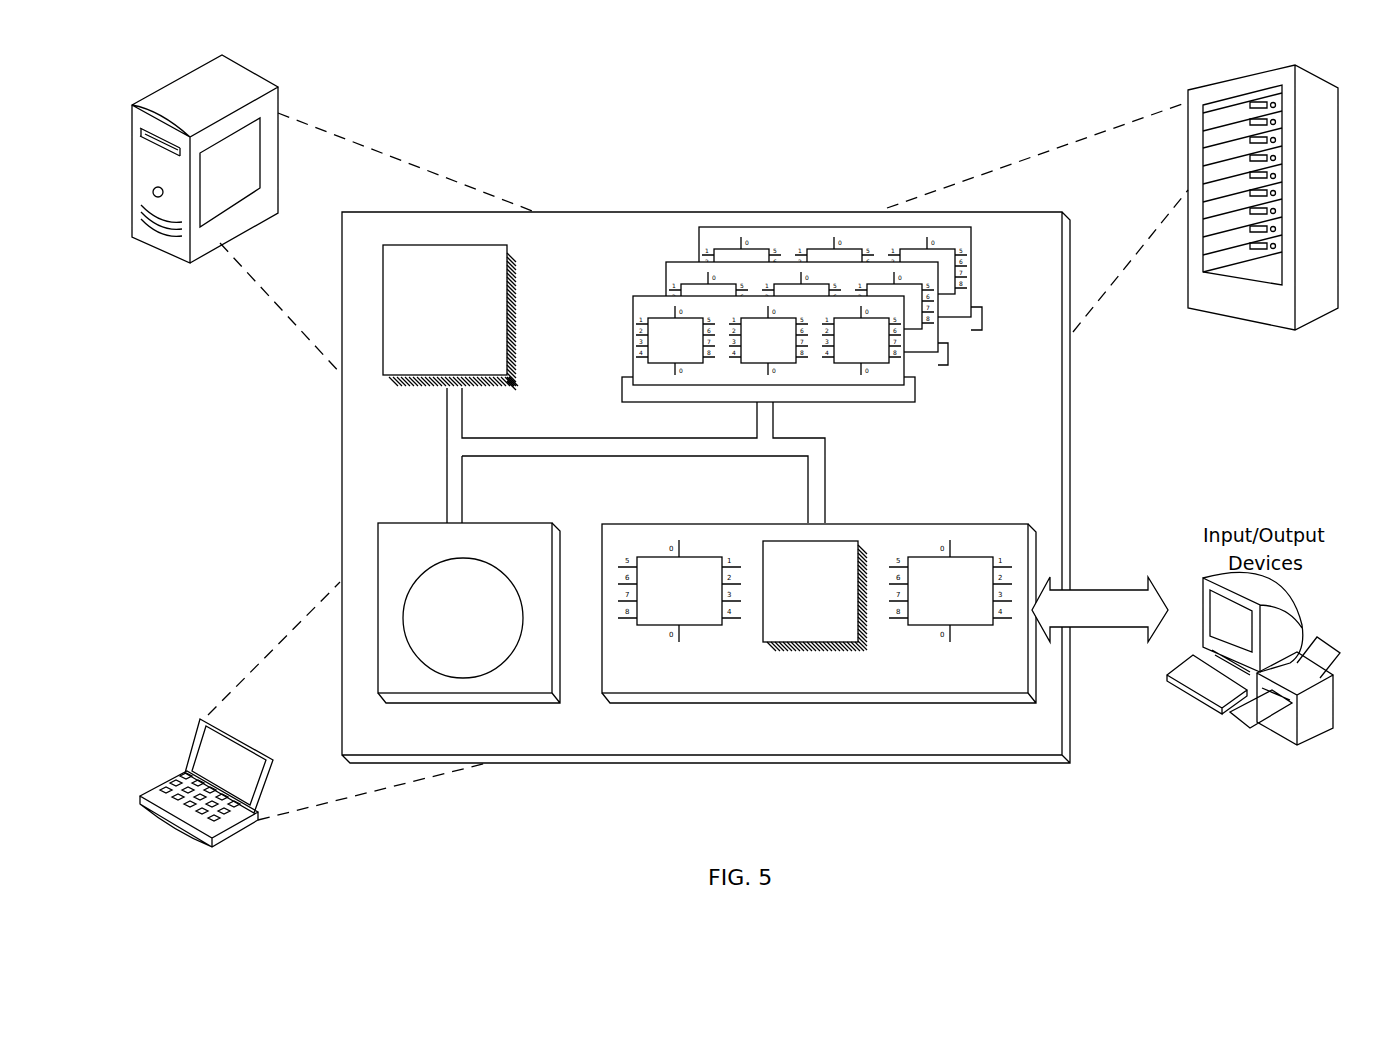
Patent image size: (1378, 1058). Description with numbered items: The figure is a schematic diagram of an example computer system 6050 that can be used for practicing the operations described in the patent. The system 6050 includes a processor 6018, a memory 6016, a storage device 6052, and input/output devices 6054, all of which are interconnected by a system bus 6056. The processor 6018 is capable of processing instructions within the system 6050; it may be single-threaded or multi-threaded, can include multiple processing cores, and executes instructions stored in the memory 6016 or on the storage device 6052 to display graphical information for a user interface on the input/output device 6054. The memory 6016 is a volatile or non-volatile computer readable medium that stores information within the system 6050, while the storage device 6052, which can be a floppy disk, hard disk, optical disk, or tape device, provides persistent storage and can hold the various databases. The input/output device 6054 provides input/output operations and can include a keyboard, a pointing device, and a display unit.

The computer system 6050 is at (531, 84).
The processor 6018 is at (450, 317).
The memory 6016 is at (976, 363).
The system bus 6056 is at (635, 456).
The storage device 6052 is at (469, 613).
The input/output devices 6054 is at (1203, 578).